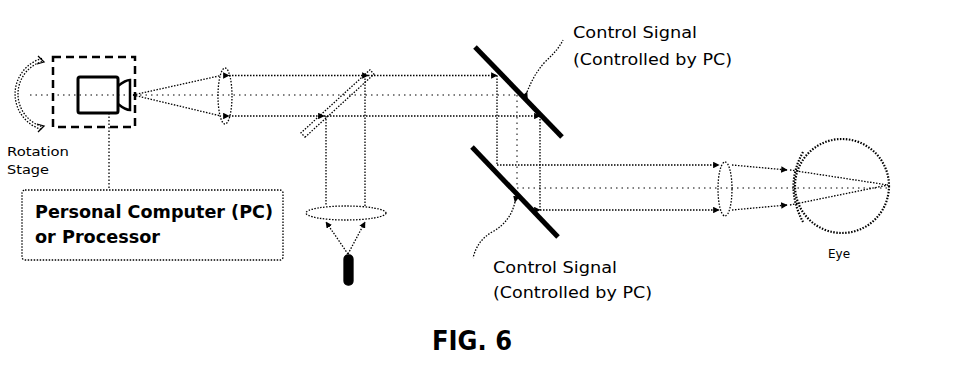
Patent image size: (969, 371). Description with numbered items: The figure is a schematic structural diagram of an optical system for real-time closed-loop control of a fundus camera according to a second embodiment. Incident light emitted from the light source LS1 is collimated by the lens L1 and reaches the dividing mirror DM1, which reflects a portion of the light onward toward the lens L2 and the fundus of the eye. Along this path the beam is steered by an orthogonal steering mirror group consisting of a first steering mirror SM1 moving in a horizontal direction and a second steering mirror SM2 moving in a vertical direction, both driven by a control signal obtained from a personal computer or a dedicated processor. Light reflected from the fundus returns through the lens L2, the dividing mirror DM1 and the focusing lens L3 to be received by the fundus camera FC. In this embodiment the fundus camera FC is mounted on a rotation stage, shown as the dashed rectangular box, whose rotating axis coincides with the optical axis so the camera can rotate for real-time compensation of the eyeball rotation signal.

The fundus camera FC is at (116, 81).
The focusing lens L3 is at (224, 86).
The dividing mirror DM1 is at (340, 92).
The lens L1 is at (359, 213).
The light source LS1 is at (365, 270).
The first steering mirror SM1 is at (537, 94).
The second steering mirror SM2 is at (533, 202).
The lens L2 is at (724, 180).